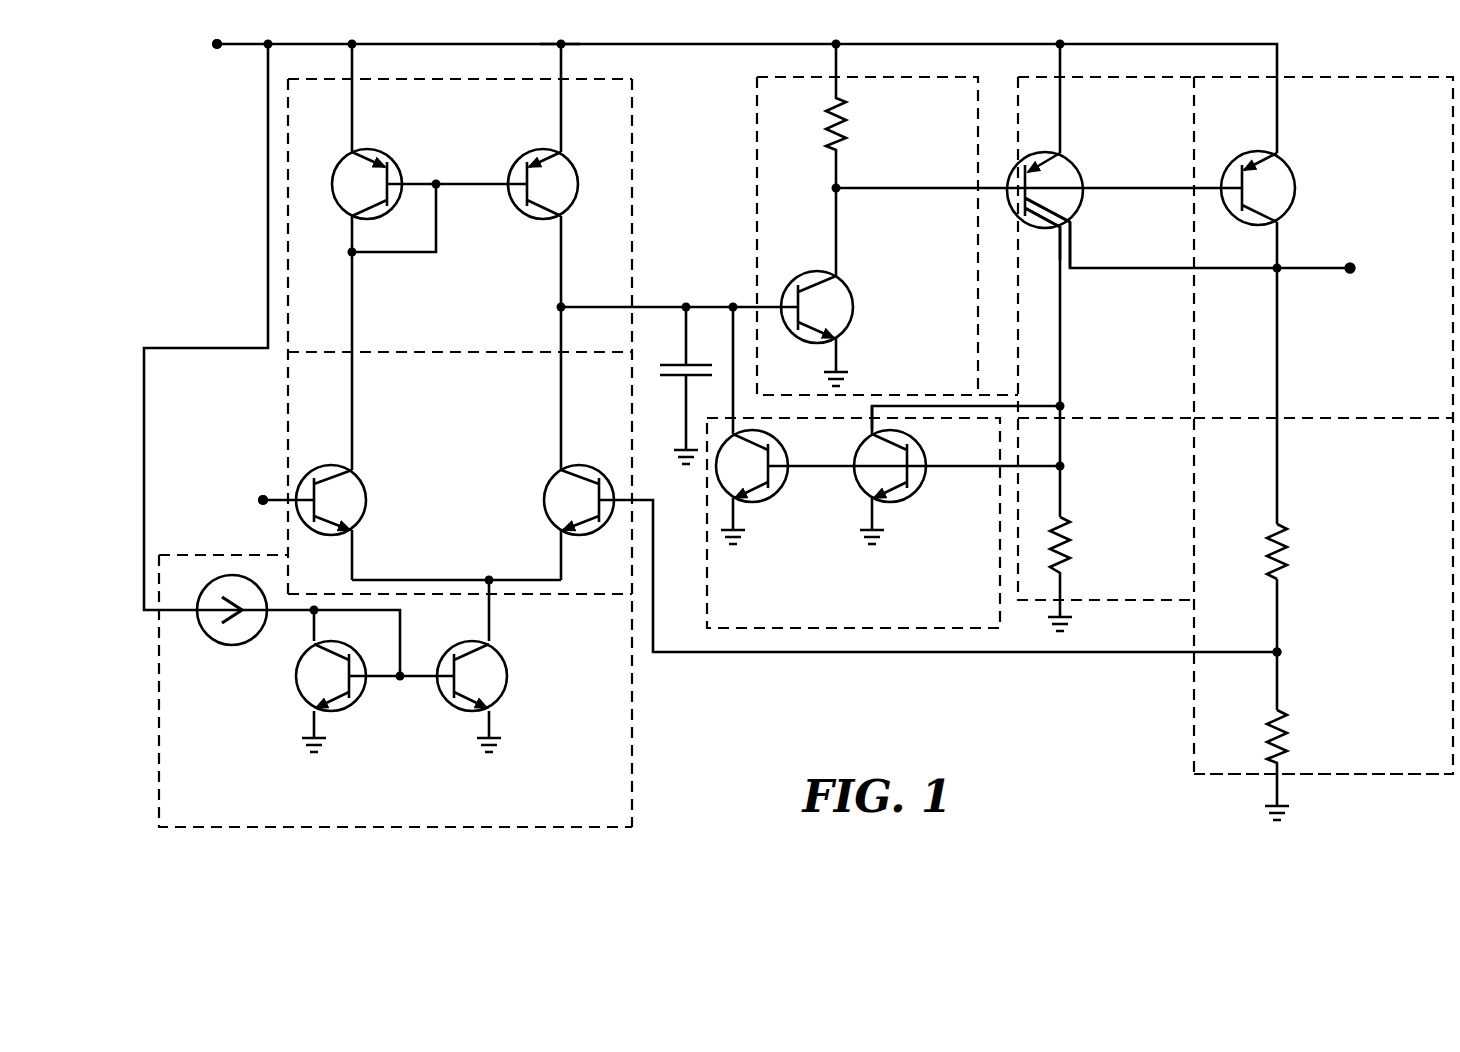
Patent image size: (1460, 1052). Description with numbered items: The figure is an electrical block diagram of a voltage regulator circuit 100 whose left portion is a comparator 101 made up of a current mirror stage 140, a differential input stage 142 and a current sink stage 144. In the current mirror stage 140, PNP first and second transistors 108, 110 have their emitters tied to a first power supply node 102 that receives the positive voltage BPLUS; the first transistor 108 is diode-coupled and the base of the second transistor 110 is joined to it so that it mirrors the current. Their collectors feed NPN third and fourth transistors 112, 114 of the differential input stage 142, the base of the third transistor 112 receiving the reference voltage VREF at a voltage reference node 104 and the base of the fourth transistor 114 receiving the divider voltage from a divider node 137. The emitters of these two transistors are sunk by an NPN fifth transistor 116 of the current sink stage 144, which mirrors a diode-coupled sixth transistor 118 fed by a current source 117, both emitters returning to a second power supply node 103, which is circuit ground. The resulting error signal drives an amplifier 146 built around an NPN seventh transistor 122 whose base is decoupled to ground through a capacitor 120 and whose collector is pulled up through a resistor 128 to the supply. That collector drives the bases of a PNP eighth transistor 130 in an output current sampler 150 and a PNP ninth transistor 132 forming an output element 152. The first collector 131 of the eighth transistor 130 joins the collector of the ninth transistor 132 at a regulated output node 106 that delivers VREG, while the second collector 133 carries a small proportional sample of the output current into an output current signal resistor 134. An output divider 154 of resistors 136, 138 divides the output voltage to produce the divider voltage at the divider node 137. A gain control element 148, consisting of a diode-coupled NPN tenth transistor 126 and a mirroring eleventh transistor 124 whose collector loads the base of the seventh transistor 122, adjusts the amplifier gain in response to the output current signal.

The voltage regulator circuit 100 is at (866, 746).
The comparator 101 is at (538, 77).
The first power supply node 102 is at (215, 37).
The second power supply node 103 is at (314, 757).
The voltage reference node 104 is at (263, 512).
The regulated output node 106 is at (1350, 262).
The first transistor 108 is at (372, 147).
The second transistor 110 is at (532, 220).
The third transistor 112 is at (358, 478).
The fourth transistor 114 is at (552, 478).
The fifth transistor 116 is at (506, 664).
The current source 117 is at (234, 645).
The sixth transistor 118 is at (297, 682).
The capacitor 120 is at (677, 364).
The seventh transistor 122 is at (817, 343).
The eleventh transistor 124 is at (775, 495).
The tenth transistor 126 is at (924, 452).
The resistor 128 is at (848, 120).
The eighth transistor 130 is at (1077, 165).
The first collector 131 is at (1073, 223).
The ninth transistor 132 is at (1292, 168).
The second collector 133 is at (1057, 230).
The output current signal resistor 134 is at (1070, 565).
The resistor 136 is at (1290, 535).
The divider node 137 is at (1290, 655).
The resistor 138 is at (1290, 715).
The current mirror stage 140 is at (287, 197).
The differential input stage 142 is at (286, 469).
The current sink stage 144 is at (631, 683).
The amplifier 146 is at (755, 187).
The gain control element 148 is at (707, 572).
The output current sampler 150 is at (1085, 77).
The output element 152 is at (1338, 77).
The output divider 154 is at (1195, 698).